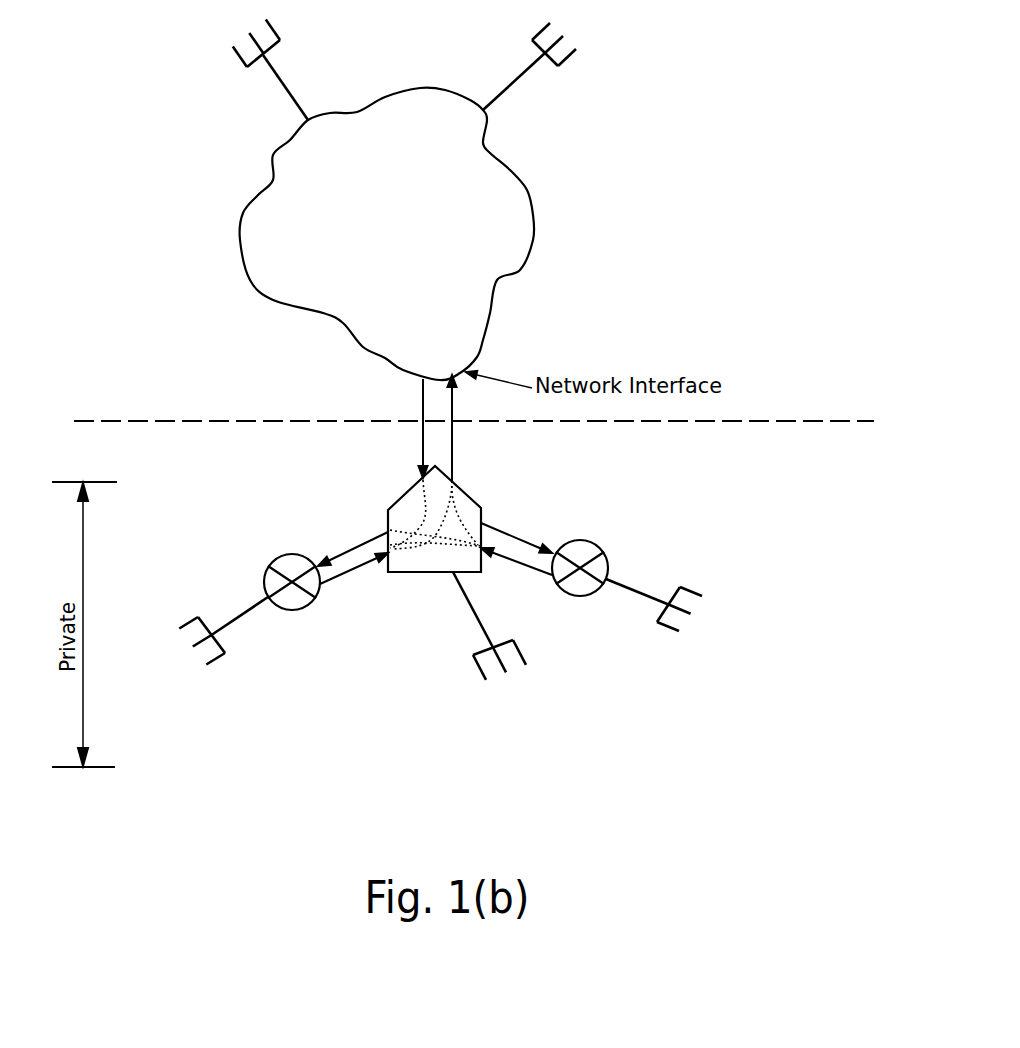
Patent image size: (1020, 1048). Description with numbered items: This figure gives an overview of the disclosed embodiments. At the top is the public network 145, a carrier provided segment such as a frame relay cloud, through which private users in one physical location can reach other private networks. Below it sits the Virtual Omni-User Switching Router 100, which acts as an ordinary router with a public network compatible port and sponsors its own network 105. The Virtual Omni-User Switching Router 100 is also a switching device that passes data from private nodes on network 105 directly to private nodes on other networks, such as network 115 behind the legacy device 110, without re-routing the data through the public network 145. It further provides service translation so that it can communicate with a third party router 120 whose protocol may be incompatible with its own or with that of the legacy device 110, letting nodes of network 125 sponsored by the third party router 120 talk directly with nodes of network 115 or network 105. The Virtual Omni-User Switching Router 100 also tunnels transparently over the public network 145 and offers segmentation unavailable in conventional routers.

The network 145 is at (404, 200).
The Virtual Omni-User Switching Router 100 is at (480, 496).
The legacy device 110 is at (264, 563).
The network 115 is at (200, 662).
The network 105 is at (508, 678).
The third party router 120 is at (607, 543).
The network 125 is at (703, 615).